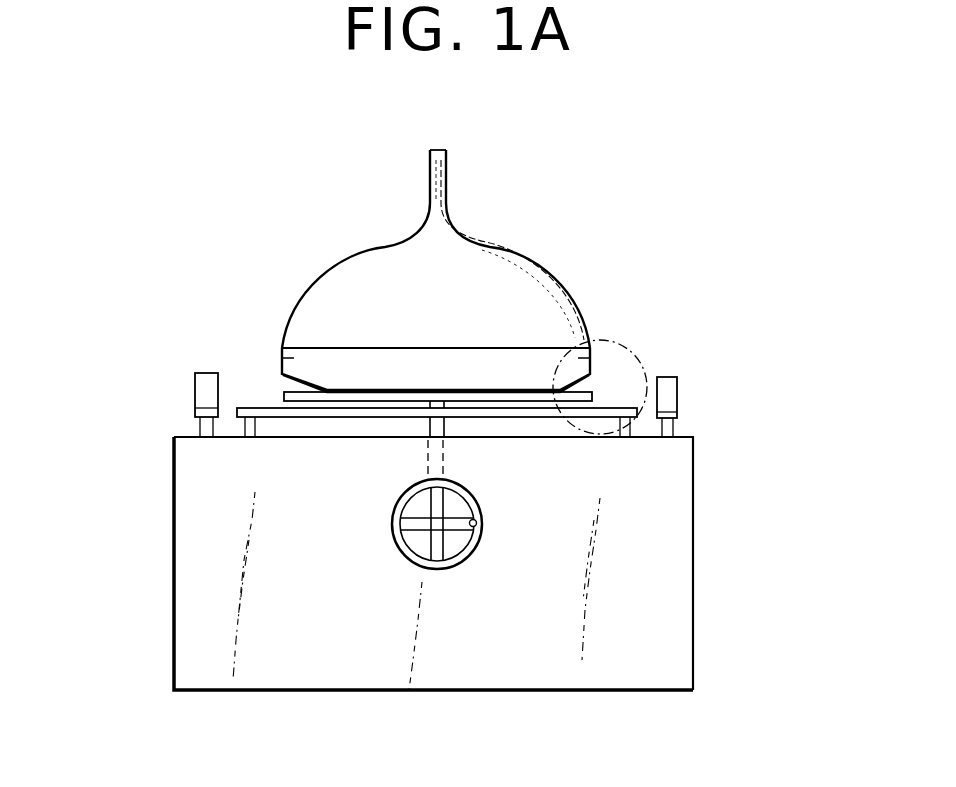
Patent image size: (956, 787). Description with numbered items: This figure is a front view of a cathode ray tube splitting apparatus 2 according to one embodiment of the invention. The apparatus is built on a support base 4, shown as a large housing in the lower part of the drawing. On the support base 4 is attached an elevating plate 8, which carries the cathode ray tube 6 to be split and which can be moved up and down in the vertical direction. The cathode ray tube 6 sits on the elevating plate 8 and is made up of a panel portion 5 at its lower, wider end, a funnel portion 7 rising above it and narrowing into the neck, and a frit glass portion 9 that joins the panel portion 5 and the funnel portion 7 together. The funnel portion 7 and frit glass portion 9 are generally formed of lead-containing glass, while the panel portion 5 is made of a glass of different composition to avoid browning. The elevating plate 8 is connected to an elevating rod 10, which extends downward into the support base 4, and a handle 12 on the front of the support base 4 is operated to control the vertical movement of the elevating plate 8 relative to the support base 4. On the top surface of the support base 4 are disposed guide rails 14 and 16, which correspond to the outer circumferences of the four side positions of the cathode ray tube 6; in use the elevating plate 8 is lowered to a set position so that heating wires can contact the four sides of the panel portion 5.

The cathode ray tube splitting apparatus 2 is at (155, 448).
The support base 4 is at (557, 665).
The panel portion 5 is at (350, 363).
The cathode ray tube 6 is at (529, 283).
The funnel portion 7 is at (377, 273).
The elevating plate 8 is at (513, 390).
The frit glass portion 9 is at (517, 349).
The elevating rod 10 is at (448, 425).
The handle 12 is at (393, 545).
The guide rail 14 is at (263, 410).
The guide rail 16 is at (203, 403).